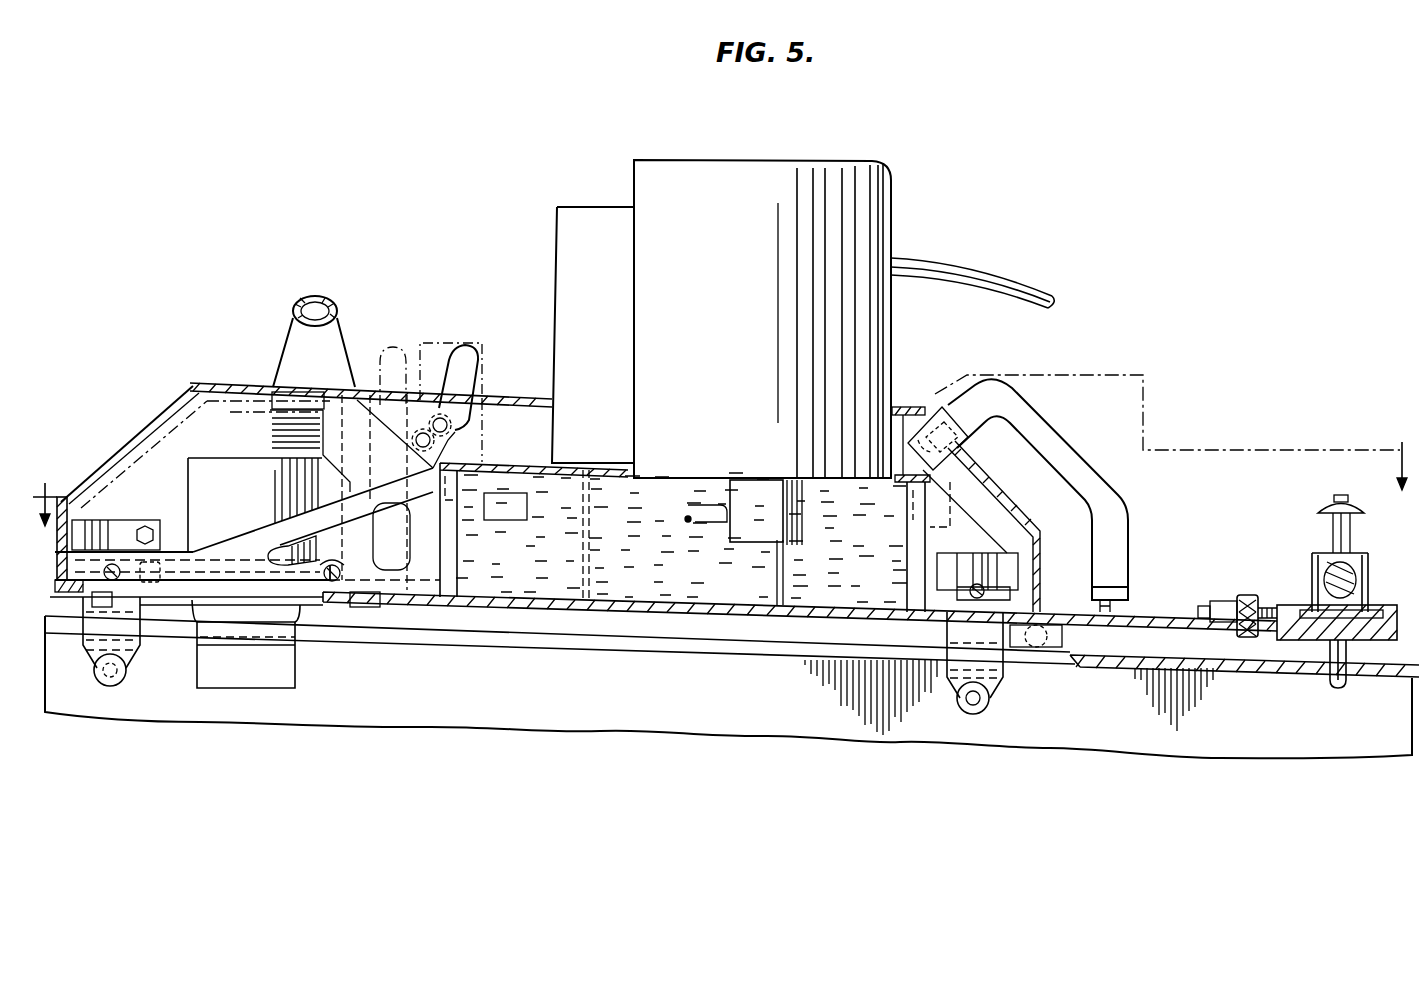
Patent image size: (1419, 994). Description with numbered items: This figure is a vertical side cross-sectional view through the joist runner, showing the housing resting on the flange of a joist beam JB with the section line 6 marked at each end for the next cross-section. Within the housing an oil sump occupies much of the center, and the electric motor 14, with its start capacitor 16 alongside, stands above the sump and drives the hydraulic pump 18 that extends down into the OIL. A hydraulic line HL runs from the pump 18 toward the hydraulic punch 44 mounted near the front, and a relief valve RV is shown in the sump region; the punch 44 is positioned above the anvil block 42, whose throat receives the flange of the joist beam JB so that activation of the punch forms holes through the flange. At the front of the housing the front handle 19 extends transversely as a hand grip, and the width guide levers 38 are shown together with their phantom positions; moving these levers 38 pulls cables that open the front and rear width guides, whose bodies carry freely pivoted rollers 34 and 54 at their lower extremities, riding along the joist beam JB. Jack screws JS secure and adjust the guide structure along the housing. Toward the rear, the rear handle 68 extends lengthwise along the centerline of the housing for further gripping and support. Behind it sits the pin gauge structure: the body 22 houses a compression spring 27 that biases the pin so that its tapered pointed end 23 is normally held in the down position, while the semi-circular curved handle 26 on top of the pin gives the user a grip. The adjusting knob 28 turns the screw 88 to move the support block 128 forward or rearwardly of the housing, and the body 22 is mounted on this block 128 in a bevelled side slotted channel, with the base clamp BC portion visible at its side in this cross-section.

The electric motor 14 is at (722, 329).
The start capacitor 16 is at (602, 329).
The hydraulic pump 18 is at (766, 516).
The front handle 19 is at (306, 300).
The body 22 is at (1346, 612).
The tapered pointed end 23 is at (1330, 652).
The semi-circular curved handle 26 is at (1328, 504).
The compression spring 27 is at (1324, 572).
The adjusting knob 28 is at (1242, 593).
The rollers 34 is at (120, 687).
The width guide levers 38 is at (460, 349).
The anvil block 42 is at (260, 676).
The hydraulic punch 44 is at (262, 504).
The rear roller 54 is at (988, 712).
The rear handle 68 is at (1043, 441).
The screw 88 is at (1270, 605).
The support block 128 is at (1244, 660).
The jack screw JS is at (116, 565).
The relief valve RV is at (505, 506).
The hydraulic line HL is at (706, 514).
The oil reservoir OIL is at (718, 575).
The joist beam JB is at (584, 699).
The base clamp BC is at (1368, 598).
The section line 6- 6 is at (724, 497).